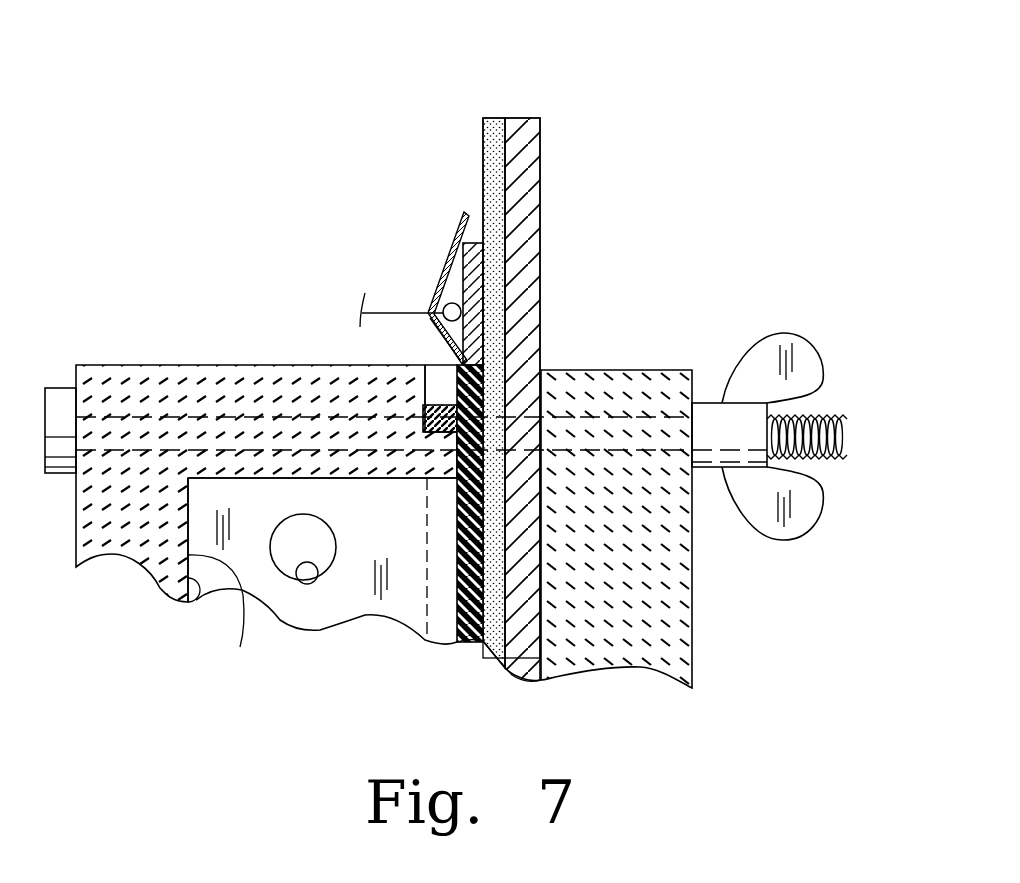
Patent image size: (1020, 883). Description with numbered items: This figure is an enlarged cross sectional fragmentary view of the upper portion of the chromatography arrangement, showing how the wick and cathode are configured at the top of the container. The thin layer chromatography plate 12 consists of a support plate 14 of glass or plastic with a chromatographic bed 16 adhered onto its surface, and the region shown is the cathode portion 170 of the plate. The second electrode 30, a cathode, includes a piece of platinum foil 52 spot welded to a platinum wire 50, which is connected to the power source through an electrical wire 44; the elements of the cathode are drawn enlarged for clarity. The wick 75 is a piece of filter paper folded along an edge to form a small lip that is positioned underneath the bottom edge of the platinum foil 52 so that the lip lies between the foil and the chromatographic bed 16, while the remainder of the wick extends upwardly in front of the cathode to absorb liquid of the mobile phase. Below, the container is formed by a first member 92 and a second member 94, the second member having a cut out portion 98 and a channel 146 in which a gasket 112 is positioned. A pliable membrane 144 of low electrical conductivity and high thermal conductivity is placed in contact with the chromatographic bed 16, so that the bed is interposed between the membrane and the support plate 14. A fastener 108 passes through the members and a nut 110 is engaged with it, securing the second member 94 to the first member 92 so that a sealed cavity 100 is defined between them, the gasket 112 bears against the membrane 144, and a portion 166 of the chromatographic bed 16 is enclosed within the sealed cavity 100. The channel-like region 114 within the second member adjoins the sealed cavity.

The thin layer chromatography plate 12 is at (530, 92).
The support plate 14 is at (541, 160).
The chromatographic bed 16 is at (487, 118).
The second electrode 30 is at (398, 225).
The electrical wire 44 is at (400, 310).
The platinum wire 50 is at (456, 306).
The platinum foil 52 is at (473, 258).
The wick 75 is at (467, 215).
The first member 92 is at (618, 378).
The second member 94 is at (127, 378).
The cut out portion 98 is at (196, 600).
The sealed cavity 100 is at (284, 594).
The fastener 108 is at (842, 422).
The nut 110 is at (800, 347).
The gasket 112 is at (433, 372).
The channel 114 is at (340, 592).
The pliable membrane 144 is at (462, 643).
The channel 146 is at (423, 407).
The portion of chromatographic bed 166 is at (490, 652).
The cathode portion 170 is at (457, 200).